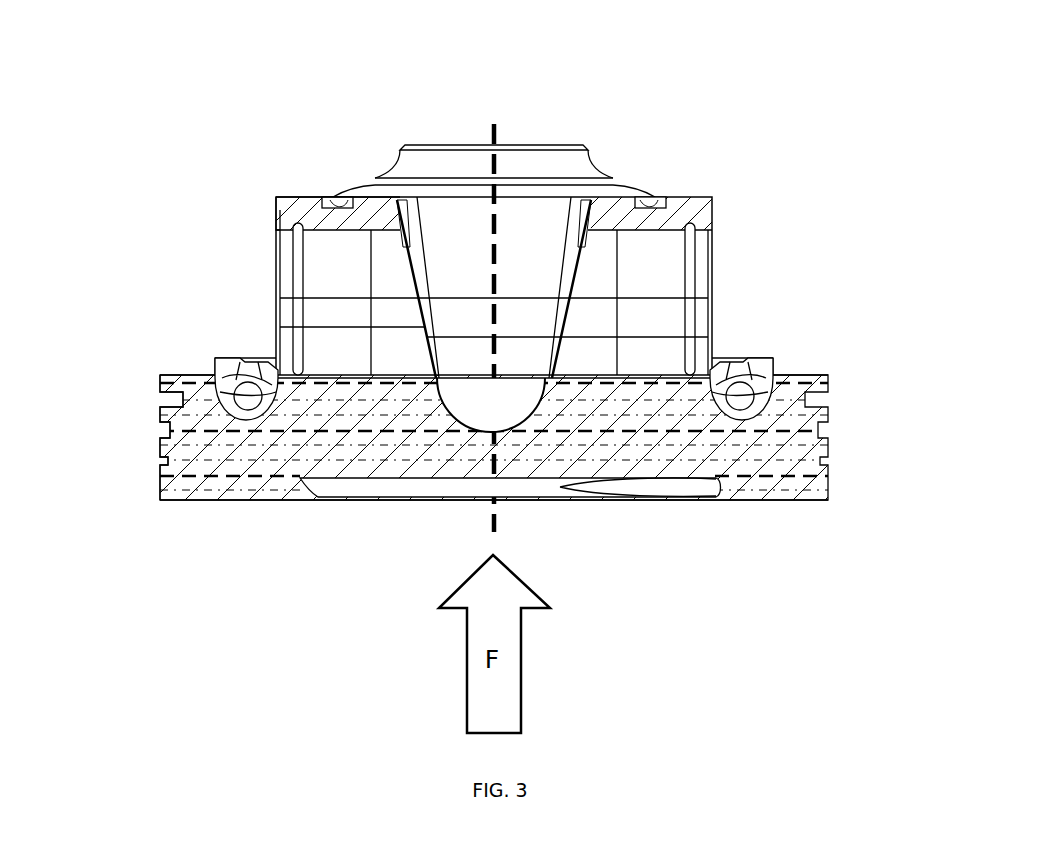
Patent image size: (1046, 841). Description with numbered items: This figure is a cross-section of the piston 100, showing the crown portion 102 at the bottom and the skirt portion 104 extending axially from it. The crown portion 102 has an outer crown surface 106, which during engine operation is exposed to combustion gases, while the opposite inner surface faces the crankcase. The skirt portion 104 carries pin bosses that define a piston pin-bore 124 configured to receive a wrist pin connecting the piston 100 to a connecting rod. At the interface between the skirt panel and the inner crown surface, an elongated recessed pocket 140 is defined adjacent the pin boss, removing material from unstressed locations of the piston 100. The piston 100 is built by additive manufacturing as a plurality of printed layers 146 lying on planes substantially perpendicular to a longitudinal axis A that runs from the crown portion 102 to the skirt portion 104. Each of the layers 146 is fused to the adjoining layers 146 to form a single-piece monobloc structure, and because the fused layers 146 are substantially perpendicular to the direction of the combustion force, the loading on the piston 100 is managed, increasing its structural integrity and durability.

The piston 100 is at (689, 80).
The crown portion 102 is at (848, 378).
The skirt portion 104 is at (848, 118).
The outer crown surface 106 is at (221, 502).
The piston pin-bore 124 is at (265, 270).
The elongated recessed pocket 140 is at (248, 397).
The printed layers 146 is at (150, 448).
The longitudinal axis A is at (497, 127).